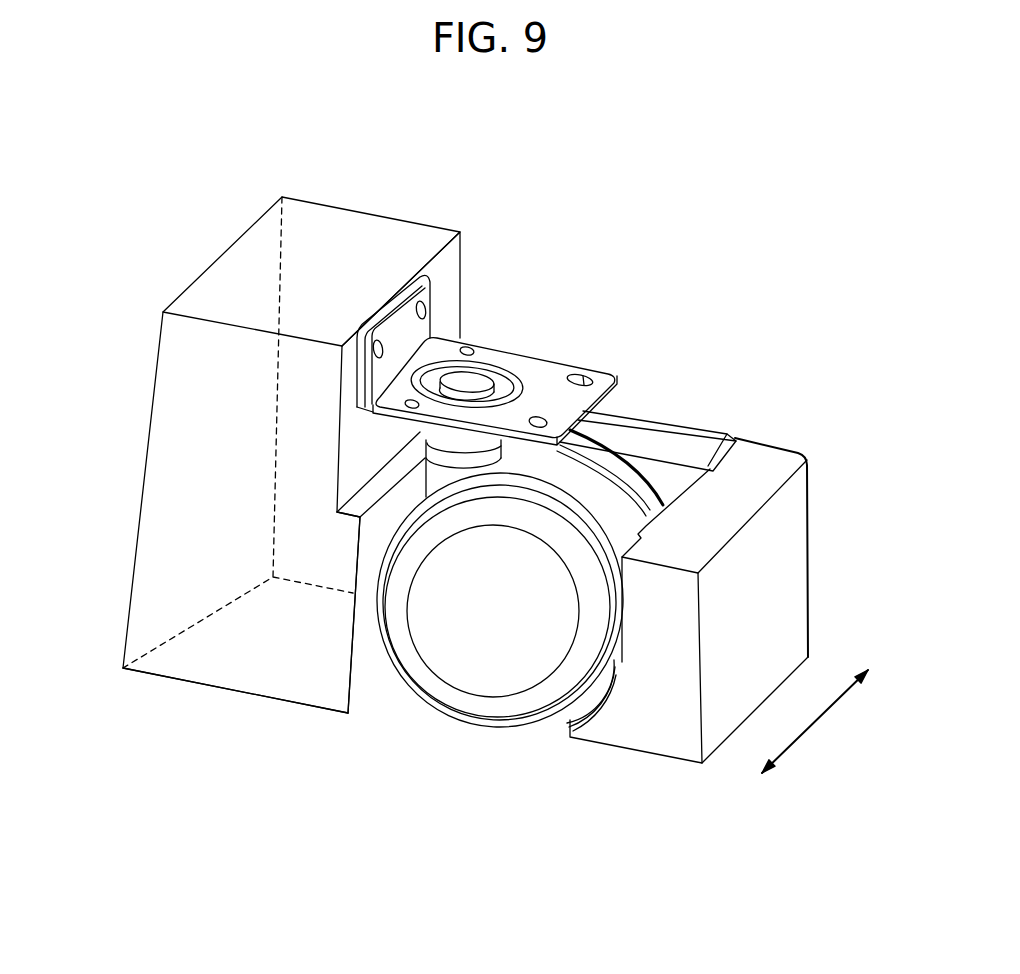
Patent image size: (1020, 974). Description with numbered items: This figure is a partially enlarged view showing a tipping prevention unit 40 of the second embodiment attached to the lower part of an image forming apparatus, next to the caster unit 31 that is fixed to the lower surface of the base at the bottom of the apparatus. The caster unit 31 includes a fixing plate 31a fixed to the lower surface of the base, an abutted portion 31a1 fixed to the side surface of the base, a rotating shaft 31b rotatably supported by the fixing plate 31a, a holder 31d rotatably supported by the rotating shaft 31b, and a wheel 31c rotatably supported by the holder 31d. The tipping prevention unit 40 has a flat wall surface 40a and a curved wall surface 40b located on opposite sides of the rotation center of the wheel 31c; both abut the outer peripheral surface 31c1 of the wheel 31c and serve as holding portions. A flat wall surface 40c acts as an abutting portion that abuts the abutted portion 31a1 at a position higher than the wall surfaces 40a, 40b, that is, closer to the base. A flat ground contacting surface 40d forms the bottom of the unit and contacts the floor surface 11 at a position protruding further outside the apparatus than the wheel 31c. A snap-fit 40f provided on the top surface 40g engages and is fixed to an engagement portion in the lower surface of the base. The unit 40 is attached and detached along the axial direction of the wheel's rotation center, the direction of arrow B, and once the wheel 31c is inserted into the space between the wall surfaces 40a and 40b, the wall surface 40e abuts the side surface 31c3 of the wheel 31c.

The floor surface 11 is at (815, 697).
The caster unit 31 is at (585, 357).
The fixing plate 31a is at (535, 370).
The abutted portion 31a1 is at (396, 328).
The rotating shaft 31b is at (475, 384).
The wheel 31c is at (465, 603).
The outer peripheral surface 31c1 is at (657, 509).
The side surface 31c3 is at (653, 508).
The holder 31d is at (440, 467).
The tipping prevention unit 40 is at (328, 206).
The wall surface 40a is at (373, 652).
The curved wall surface 40b is at (614, 658).
The wall surface 40c is at (452, 262).
The ground contacting surface 40d is at (190, 681).
The wall surface 40e is at (670, 480).
The snap-fit 40f is at (647, 443).
The top surface 40g is at (760, 465).